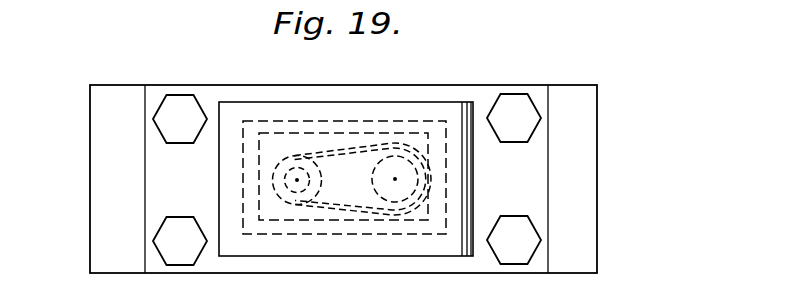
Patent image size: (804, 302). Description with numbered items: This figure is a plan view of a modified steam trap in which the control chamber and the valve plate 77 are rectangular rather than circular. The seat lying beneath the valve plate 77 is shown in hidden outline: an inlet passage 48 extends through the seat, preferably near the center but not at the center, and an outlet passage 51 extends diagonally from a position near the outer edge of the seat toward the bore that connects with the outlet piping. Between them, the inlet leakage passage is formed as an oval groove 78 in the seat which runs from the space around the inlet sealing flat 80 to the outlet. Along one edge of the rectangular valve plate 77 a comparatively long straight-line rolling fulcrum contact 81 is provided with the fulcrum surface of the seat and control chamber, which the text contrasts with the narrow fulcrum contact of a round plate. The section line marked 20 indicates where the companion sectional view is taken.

The rolling fulcrum contact 81 is at (246, 153).
The valve plate 77 is at (355, 162).
The oval groove 78 is at (413, 147).
The outlet passage 51 is at (297, 182).
The inlet passage 48 is at (388, 205).
The inlet sealing flat 80 is at (404, 210).
The section line 20- 20 is at (42, 165).